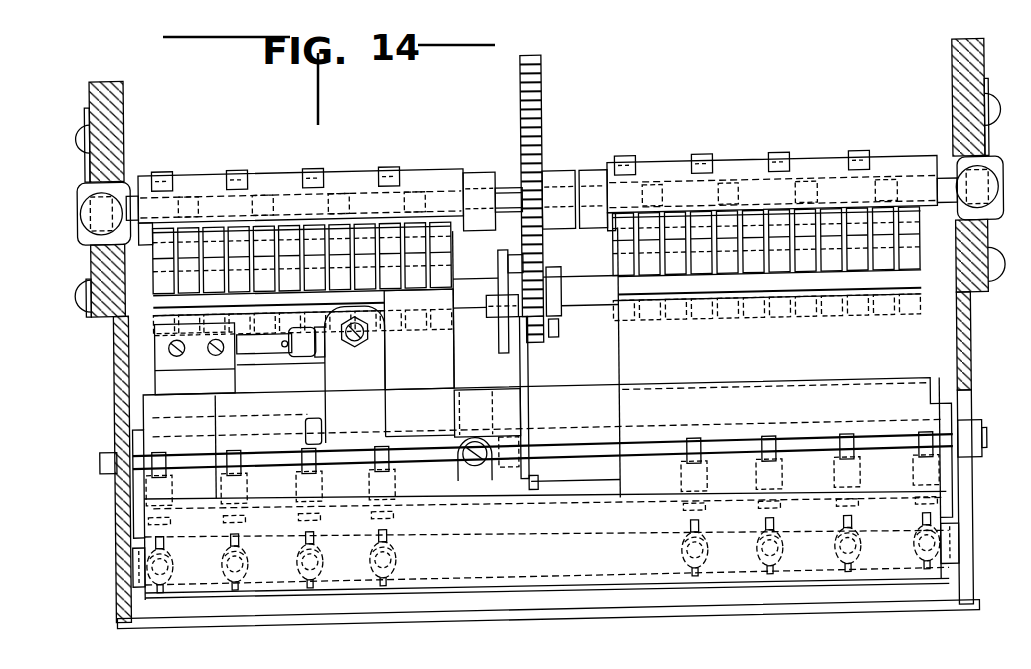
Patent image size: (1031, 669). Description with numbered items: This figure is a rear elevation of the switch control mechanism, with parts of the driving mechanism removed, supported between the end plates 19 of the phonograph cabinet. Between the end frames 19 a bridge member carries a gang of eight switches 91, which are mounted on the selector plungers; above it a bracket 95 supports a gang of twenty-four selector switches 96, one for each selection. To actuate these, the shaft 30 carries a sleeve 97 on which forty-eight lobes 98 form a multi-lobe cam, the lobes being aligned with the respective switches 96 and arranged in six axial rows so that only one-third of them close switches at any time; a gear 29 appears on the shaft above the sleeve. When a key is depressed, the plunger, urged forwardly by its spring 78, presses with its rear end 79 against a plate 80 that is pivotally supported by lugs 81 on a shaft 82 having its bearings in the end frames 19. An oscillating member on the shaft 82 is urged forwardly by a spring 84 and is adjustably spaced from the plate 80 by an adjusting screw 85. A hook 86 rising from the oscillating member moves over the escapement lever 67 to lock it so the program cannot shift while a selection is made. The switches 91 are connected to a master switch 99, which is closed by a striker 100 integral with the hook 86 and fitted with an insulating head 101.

The end plates 19 is at (113, 358).
The gear 29 is at (535, 127).
The shaft 30 is at (505, 196).
The escapement lever 67 is at (500, 278).
The spring 78 is at (292, 572).
The rear end 79 is at (318, 574).
The plate 80 is at (425, 572).
The lugs 81 is at (305, 431).
The shaft 82 is at (130, 447).
The spring 84 is at (490, 440).
The adjusting screw 85 is at (461, 467).
The hook 86 is at (488, 330).
The switches 91 is at (130, 498).
The bracket 95 is at (160, 383).
The selector switches 96 is at (157, 275).
The sleeve 97 is at (275, 183).
The lobes 98 is at (237, 175).
The master switch 99 is at (305, 361).
The striker 100 is at (375, 378).
The insulating head 101 is at (347, 360).